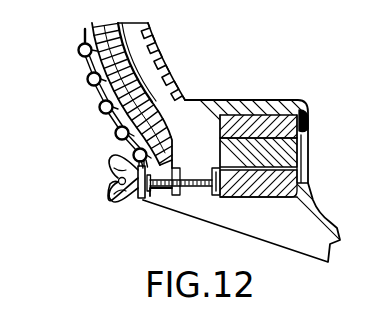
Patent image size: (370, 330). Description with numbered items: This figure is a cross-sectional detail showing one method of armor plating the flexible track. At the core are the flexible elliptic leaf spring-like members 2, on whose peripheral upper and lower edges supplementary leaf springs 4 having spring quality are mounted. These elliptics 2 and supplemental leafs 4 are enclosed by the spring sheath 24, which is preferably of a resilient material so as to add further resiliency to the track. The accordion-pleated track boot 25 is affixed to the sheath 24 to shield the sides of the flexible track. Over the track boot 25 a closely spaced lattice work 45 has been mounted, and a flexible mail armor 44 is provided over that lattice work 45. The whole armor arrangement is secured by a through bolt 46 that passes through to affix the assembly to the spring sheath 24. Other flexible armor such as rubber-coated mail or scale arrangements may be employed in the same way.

The flexible elliptic leaf spring-like member 2 is at (280, 158).
The supplementary leaf spring 4 is at (273, 127).
The spring sheath 24 is at (245, 100).
The track boot 25 is at (172, 84).
The flexible mail armor 44 is at (100, 100).
The lattice work 45 is at (88, 72).
The through bolt 46 is at (143, 197).